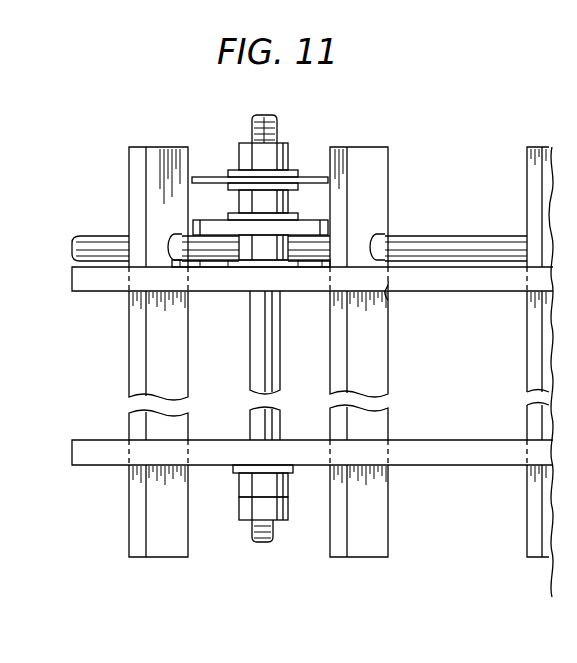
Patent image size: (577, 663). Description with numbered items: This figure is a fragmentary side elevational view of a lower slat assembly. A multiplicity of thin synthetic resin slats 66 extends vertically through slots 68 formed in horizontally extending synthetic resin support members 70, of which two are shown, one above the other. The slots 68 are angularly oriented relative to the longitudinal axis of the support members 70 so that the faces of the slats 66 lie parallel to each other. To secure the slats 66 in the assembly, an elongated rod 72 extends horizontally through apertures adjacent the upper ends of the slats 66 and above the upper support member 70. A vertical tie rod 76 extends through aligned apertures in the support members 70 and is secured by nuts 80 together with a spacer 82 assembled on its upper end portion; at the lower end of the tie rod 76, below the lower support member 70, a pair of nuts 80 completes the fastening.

The slat 66 is at (168, 147).
The slot 68 is at (390, 299).
The support member 70 is at (95, 278).
The elongated rod 72 is at (467, 247).
The vertical tie rod 76 is at (262, 330).
The nut 80 is at (283, 153).
The spacer 82 is at (322, 219).